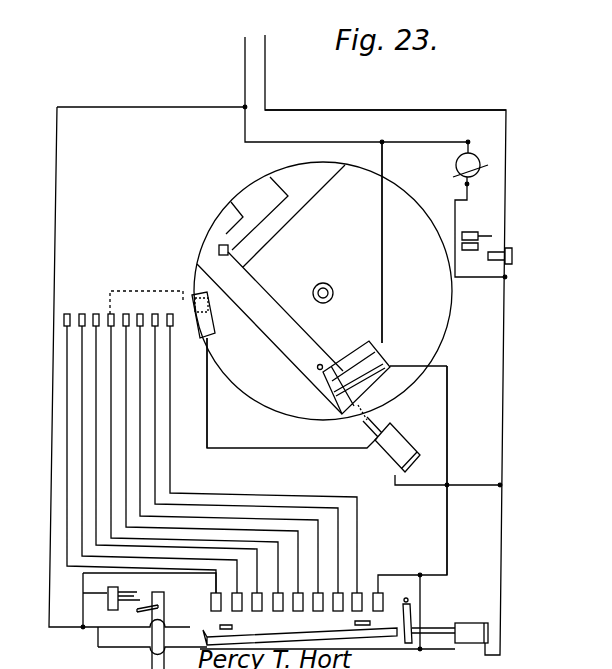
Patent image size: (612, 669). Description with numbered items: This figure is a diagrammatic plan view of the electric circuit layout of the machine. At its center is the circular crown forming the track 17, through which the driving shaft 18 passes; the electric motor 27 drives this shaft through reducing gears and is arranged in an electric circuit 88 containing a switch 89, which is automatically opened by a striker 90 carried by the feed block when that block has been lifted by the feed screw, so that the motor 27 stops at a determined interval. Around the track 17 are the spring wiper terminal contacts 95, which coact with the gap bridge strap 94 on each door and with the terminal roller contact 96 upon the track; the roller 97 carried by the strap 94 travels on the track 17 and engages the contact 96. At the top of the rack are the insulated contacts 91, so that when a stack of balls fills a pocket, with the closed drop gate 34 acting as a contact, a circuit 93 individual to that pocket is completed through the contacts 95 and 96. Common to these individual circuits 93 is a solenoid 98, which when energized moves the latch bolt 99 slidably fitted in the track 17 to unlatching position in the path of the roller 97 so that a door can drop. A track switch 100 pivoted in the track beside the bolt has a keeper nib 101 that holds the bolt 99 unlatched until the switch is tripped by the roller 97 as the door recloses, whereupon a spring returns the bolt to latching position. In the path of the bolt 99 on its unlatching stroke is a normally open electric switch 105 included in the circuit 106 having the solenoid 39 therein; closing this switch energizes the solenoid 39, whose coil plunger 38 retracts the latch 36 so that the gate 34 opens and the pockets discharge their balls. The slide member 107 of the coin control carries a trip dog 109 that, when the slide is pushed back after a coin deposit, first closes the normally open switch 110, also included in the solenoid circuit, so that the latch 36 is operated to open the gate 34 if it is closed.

The track 17 is at (450, 318).
The driving shaft 18 is at (329, 283).
The electric motor 27 is at (453, 167).
The drop gate 34 is at (207, 637).
The latch 36 is at (402, 603).
The coil plunger 38 is at (437, 626).
The solenoid 39 is at (468, 620).
The electric circuit 88 is at (331, 108).
The switch 89 is at (473, 229).
The striker 90 is at (490, 262).
The contacts 91 is at (210, 604).
The circuit 93 is at (93, 543).
The gap bridge strap 94 is at (135, 291).
The spring wiper terminal contact 95 is at (108, 313).
The terminal roller contact 96 is at (212, 328).
The roller 97 is at (200, 292).
The solenoid 98 is at (397, 440).
The latch bolt 99 is at (267, 298).
The track switch 100 is at (250, 196).
The keeper nib 101 is at (222, 245).
The electric switch 105 is at (338, 367).
The circuit 106 is at (383, 268).
The slide member 107 is at (150, 664).
The trip dog 109 is at (145, 606).
The switch 110 is at (107, 590).